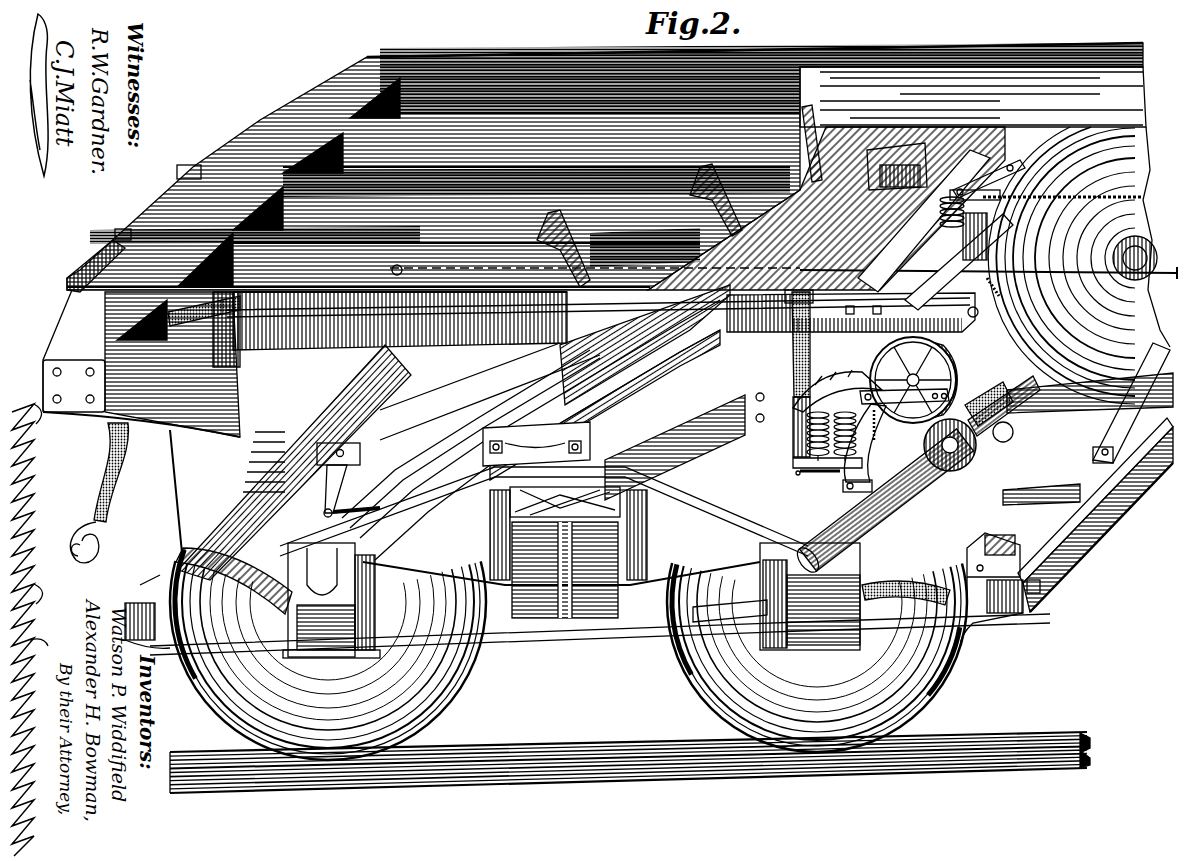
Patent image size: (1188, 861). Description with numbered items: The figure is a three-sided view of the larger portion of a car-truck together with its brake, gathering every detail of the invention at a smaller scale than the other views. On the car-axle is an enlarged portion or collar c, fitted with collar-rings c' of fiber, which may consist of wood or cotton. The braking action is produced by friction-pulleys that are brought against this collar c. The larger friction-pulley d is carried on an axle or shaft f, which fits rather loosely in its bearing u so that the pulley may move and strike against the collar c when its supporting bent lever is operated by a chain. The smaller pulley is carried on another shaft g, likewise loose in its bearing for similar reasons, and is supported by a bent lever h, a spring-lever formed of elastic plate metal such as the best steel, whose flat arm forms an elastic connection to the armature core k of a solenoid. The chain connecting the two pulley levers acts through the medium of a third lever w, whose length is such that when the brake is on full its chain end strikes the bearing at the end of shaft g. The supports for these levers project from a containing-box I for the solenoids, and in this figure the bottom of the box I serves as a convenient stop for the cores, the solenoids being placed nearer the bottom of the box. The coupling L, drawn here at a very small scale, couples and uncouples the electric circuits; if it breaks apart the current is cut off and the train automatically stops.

The axle or shaft f is at (990, 276).
The bearing u is at (973, 318).
The friction-pulley d is at (940, 372).
The containing-box I is at (858, 384).
The third lever w is at (905, 400).
The shaft g is at (872, 484).
The bent lever h is at (836, 462).
The core k is at (800, 470).
The collar c is at (950, 445).
The collar-rings c' is at (1002, 417).
The coupling L is at (102, 540).